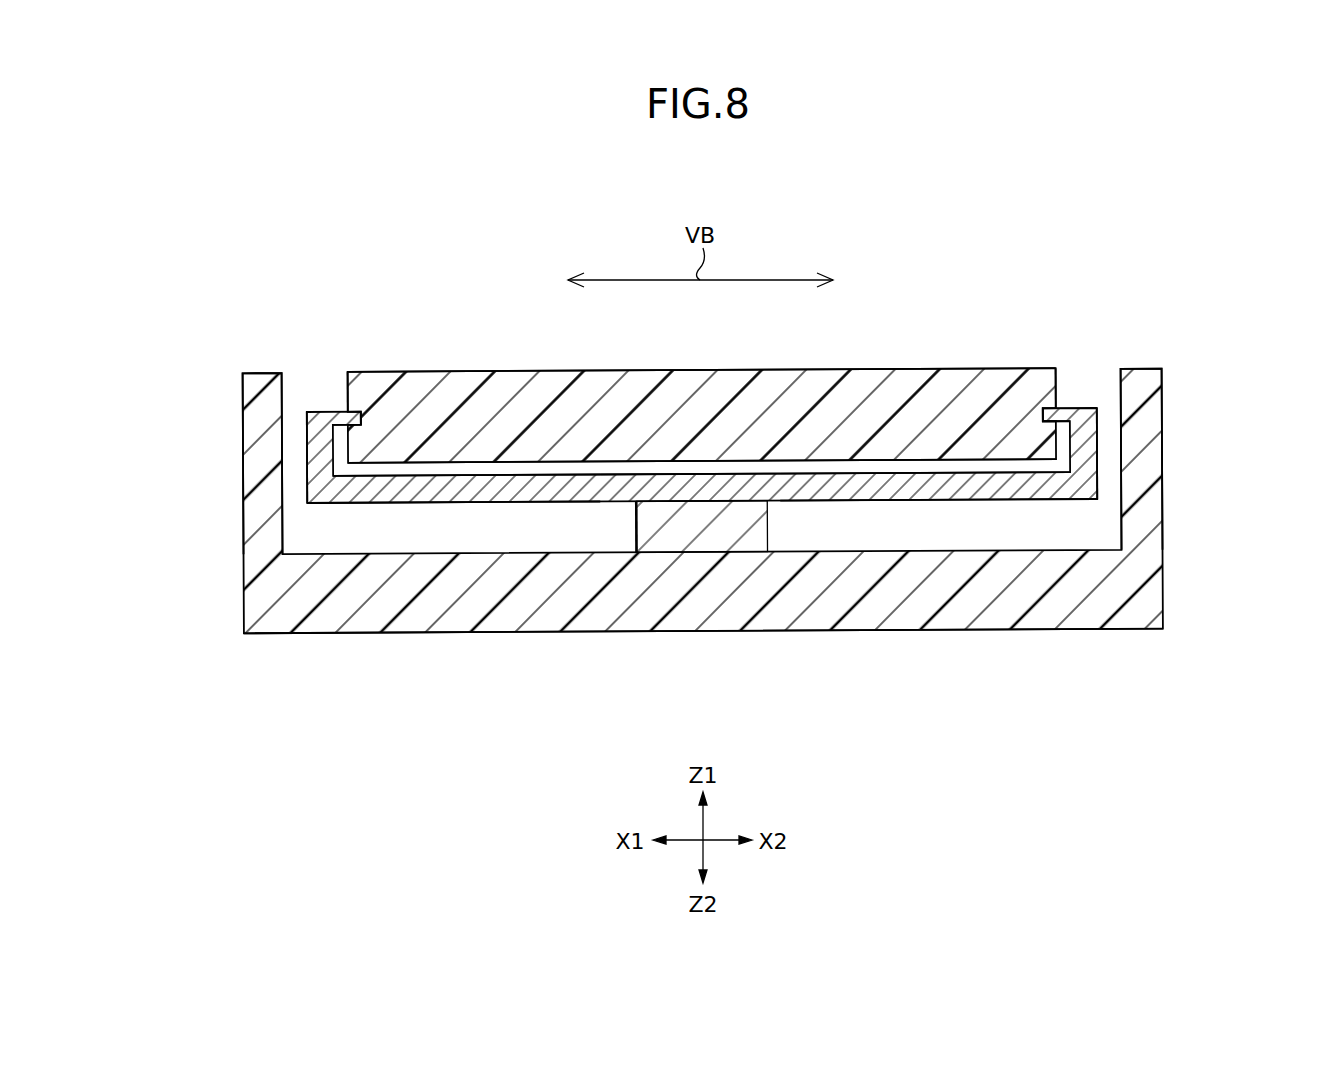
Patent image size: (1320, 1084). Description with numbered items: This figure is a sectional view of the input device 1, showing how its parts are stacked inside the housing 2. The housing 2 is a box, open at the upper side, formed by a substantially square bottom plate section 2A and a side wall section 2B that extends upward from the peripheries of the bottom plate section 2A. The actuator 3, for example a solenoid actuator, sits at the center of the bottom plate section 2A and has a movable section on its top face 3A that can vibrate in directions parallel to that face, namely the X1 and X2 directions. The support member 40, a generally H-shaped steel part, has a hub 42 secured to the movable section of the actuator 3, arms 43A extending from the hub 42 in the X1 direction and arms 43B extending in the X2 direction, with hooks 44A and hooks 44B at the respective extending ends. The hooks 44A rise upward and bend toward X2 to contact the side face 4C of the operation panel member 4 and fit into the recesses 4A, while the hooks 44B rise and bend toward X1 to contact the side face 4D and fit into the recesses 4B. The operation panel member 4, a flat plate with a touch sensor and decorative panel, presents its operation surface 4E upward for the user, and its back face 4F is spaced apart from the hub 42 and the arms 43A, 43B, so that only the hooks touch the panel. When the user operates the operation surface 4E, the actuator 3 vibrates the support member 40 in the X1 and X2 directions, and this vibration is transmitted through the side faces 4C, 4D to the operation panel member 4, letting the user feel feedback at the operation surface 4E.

The input device 1 is at (1124, 274).
The housing 2 is at (266, 652).
The bottom plate section 2A is at (1004, 615).
The side wall section 2B is at (258, 513).
The actuator 3 is at (730, 533).
The top face 3A is at (655, 500).
The operation panel member 4 is at (905, 370).
The recesses 4A is at (345, 421).
The recesses 4B is at (1057, 422).
The side face 4C is at (348, 382).
The side face 4D is at (1058, 388).
The operation surface 4E is at (626, 370).
The back face 4F is at (552, 463).
The support member 40 is at (543, 527).
The hub 42 is at (690, 487).
The arms 43A is at (450, 490).
The arms 43B is at (885, 490).
The hooks 44A is at (340, 418).
The hooks 44B is at (1060, 420).